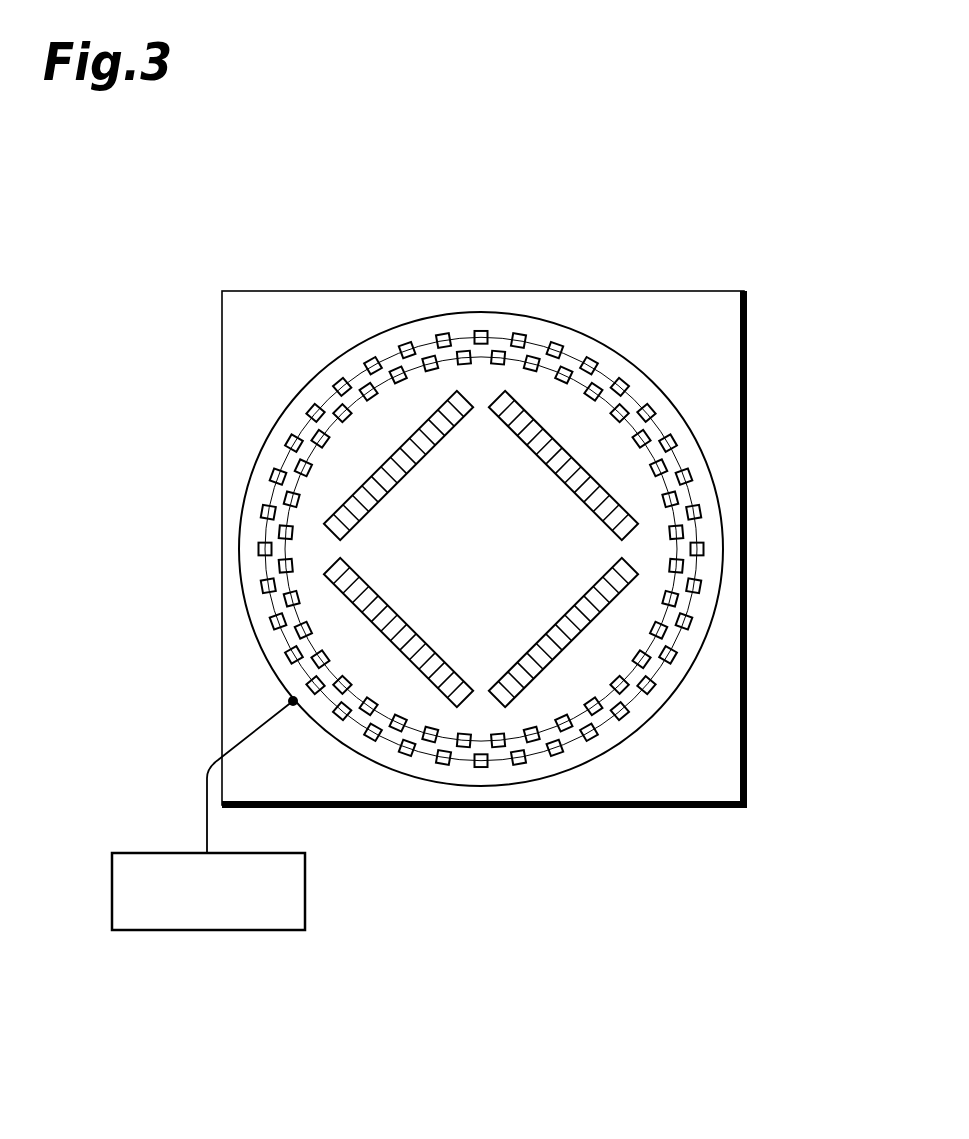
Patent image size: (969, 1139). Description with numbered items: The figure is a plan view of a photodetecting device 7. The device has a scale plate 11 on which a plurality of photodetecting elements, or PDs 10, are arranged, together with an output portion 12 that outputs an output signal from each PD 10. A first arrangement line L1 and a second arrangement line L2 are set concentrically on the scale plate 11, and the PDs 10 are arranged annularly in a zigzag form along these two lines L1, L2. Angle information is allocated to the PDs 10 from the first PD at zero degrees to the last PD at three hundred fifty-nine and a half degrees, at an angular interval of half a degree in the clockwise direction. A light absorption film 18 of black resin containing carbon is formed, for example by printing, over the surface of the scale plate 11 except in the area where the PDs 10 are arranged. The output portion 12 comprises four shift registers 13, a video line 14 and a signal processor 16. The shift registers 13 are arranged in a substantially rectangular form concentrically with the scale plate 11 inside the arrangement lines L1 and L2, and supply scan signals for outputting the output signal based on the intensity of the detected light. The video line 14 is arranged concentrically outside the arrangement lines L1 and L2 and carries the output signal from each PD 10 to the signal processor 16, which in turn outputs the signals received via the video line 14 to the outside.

The photodetecting device 7 is at (500, 524).
The photodetecting element (PD) 10 is at (685, 815).
The scale plate 11 is at (745, 352).
The output portion 12 is at (417, 668).
The shift register 13 is at (530, 447).
The video line 14 is at (520, 787).
The signal processor 16 is at (207, 930).
The light absorption film 18 is at (715, 719).
The first arrangement line L1 is at (680, 508).
The second arrangement line L2 is at (698, 562).